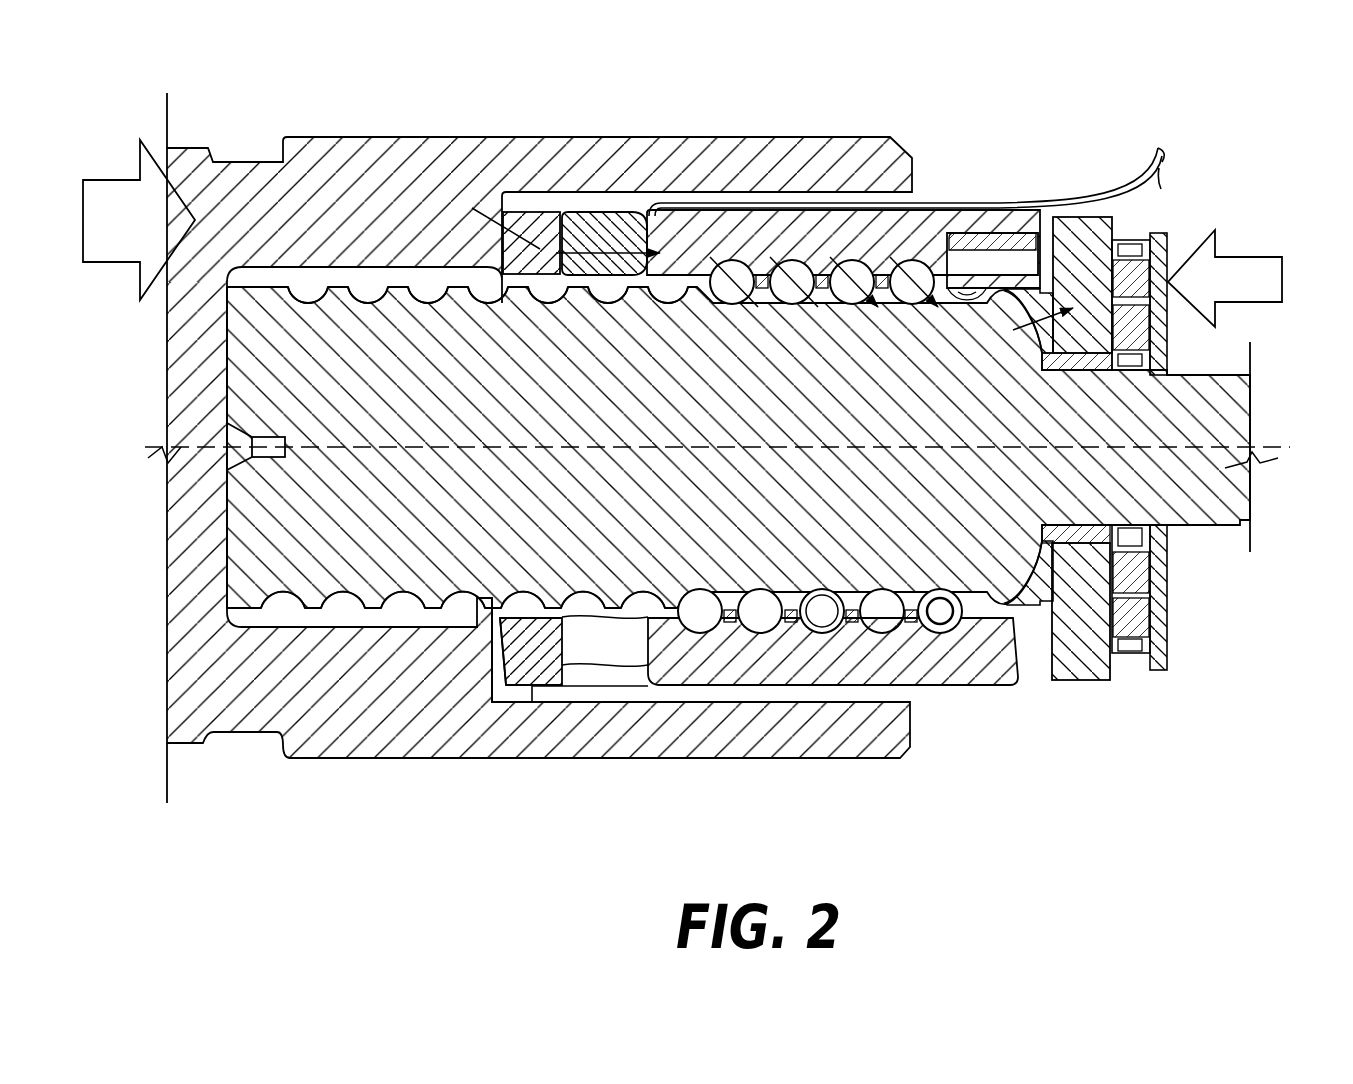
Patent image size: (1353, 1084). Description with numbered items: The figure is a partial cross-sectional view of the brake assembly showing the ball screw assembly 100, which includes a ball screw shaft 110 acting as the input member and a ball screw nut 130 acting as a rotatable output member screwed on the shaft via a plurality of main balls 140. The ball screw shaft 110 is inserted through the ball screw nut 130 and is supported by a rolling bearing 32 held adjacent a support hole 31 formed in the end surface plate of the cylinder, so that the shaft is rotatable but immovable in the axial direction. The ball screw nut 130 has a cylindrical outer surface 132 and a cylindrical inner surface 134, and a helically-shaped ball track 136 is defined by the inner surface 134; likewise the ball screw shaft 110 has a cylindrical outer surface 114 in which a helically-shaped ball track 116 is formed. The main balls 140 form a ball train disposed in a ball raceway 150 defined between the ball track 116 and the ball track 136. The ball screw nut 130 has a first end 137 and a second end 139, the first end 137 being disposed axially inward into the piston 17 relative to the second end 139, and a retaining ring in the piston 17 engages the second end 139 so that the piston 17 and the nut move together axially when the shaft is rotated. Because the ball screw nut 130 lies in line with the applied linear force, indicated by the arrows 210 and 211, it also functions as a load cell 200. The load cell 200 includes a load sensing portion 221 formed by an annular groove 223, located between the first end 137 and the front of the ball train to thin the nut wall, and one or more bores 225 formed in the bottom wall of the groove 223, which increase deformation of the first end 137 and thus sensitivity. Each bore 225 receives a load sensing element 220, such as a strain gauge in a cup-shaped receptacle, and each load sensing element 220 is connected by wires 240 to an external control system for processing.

The piston 17 is at (337, 150).
The support hole 31 is at (1235, 522).
The rolling bearing 32 is at (1140, 333).
The ball screw assembly 100 is at (702, 471).
The ball screw shaft 110 is at (727, 421).
The cylindrical outer surface 114 is at (313, 610).
The helically-shaped ball track 116 is at (310, 303).
The ball screw nut 130 is at (835, 688).
The cylindrical outer surface 132 is at (783, 686).
The cylindrical inner surface 134 is at (512, 683).
The helically-shaped ball track 136 is at (818, 633).
The first end 137 is at (527, 702).
The second end 139 is at (1025, 662).
The main balls 140 is at (922, 267).
The ball raceway 150 is at (703, 624).
The load cell 200 is at (657, 172).
The arrow 210 is at (107, 262).
The arrow 211 is at (501, 212).
The load sensing element 220 is at (603, 233).
The load sensing portion 221 is at (603, 674).
The annular groove 223 is at (647, 673).
The bore 225 is at (562, 240).
The wires 240 is at (828, 203).